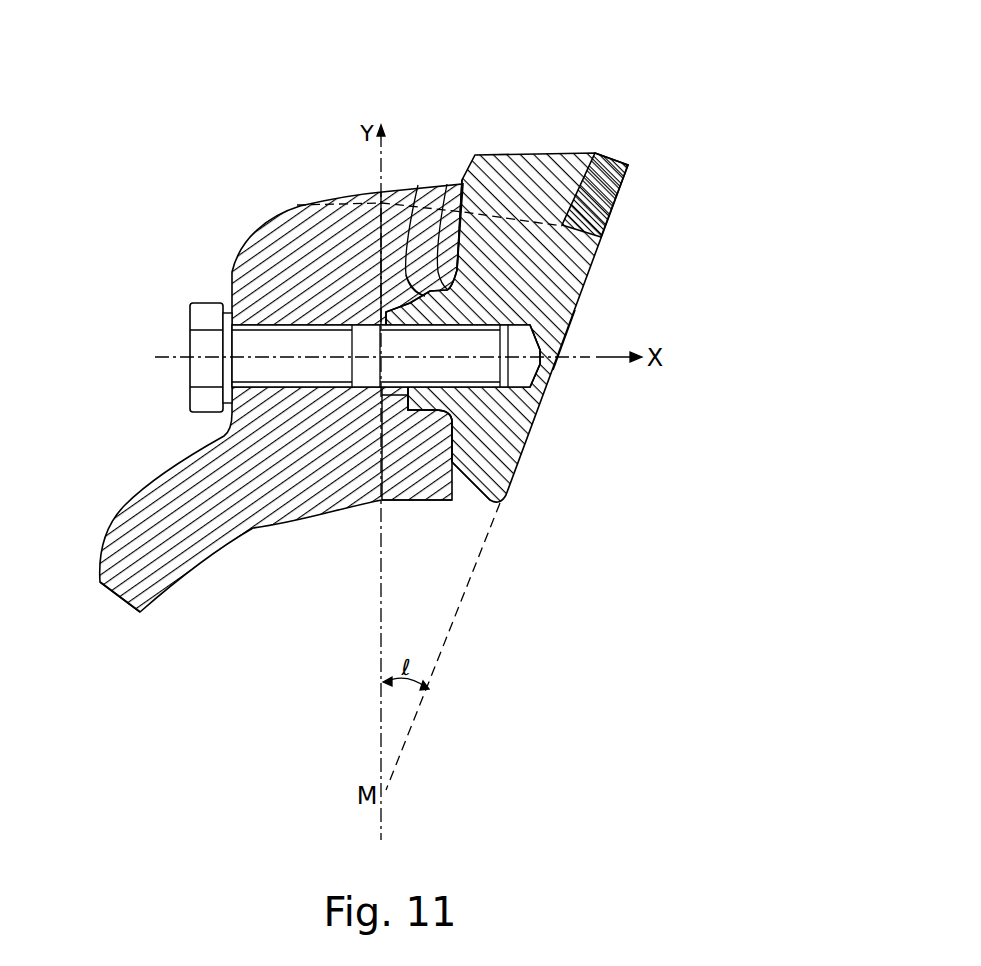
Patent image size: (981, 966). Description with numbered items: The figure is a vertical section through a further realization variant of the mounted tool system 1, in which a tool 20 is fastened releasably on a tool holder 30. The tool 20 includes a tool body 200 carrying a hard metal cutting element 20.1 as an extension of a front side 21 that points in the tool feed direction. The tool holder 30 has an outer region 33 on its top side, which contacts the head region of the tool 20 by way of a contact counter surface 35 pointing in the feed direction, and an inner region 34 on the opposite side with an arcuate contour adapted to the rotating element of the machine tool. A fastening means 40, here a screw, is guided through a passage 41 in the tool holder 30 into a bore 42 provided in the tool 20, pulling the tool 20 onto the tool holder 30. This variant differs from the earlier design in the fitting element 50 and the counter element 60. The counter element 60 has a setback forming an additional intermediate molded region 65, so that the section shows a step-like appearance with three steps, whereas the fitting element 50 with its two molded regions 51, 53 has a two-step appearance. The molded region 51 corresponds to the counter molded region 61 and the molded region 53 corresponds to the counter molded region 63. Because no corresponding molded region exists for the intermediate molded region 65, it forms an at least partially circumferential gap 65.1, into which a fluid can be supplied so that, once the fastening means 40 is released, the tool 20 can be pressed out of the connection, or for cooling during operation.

The tool system 1 is at (589, 95).
The tool 20 is at (552, 474).
The cutting element 20.1 is at (613, 193).
The front side 21 is at (577, 320).
The tool body 200 is at (553, 273).
The tool holder 30 is at (116, 484).
The outer region 33 is at (283, 243).
The inner region 34 is at (150, 567).
The contact counter surface 35 is at (461, 186).
The fastening means 40 is at (200, 340).
The passage 41 is at (258, 318).
The bore 42 is at (537, 393).
The fitting element 50 is at (405, 402).
The molded region 51 is at (425, 418).
The molded region 53 is at (373, 503).
The counter element 60 is at (380, 272).
The counter molded region 61 is at (445, 422).
The counter molded region 63 is at (377, 503).
The intermediate molded region 65 is at (404, 290).
The circumferential gap 65.1 is at (445, 187).